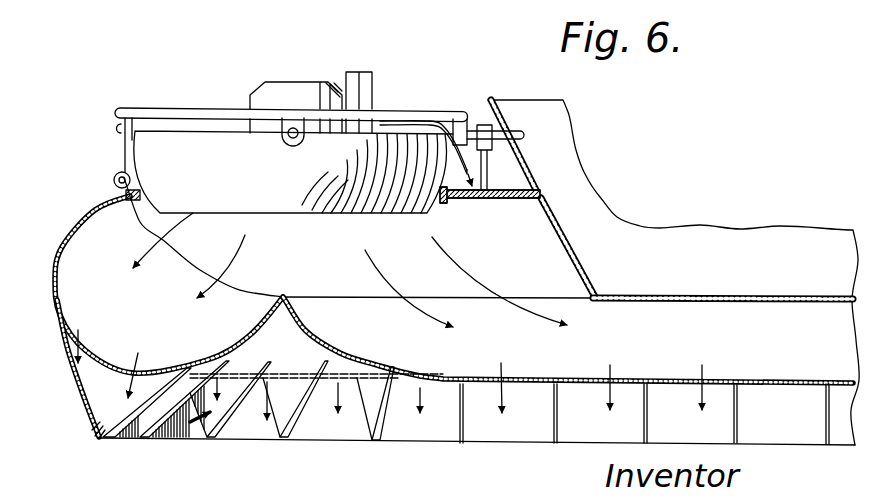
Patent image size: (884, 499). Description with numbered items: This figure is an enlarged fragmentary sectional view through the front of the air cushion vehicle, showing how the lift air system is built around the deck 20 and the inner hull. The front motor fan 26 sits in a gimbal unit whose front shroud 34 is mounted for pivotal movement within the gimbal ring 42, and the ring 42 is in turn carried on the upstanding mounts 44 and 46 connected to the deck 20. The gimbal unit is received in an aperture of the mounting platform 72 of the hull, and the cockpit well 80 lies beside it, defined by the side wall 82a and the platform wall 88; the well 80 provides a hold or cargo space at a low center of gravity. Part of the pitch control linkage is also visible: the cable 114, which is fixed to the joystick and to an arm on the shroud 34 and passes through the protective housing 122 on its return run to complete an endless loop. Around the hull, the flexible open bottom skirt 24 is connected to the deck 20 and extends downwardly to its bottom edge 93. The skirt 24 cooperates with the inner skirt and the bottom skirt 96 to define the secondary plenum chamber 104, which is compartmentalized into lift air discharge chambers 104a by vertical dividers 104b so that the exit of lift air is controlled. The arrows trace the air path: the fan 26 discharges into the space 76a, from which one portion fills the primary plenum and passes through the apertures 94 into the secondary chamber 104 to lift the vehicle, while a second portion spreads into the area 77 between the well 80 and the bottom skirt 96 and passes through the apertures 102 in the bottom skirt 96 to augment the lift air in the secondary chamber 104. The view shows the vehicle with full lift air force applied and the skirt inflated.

The deck 20 is at (510, 190).
The flexible open bottom skirt 24 is at (77, 230).
The front motor fan 26 is at (302, 102).
The front shroud 34 is at (240, 177).
The gimbal ring 42 is at (452, 112).
The upstanding mount 44 is at (124, 152).
The upstanding mount 46 is at (480, 123).
The mounting platform 72 is at (520, 199).
The space 76a is at (328, 259).
The area 77 is at (677, 346).
The well 80 is at (753, 294).
The side wall 82a is at (162, 231).
The platform wall 88 is at (567, 243).
The bottom edge 93 is at (99, 437).
The apertures 94 is at (138, 353).
The bottom skirt 96 is at (360, 348).
The apertures 102 is at (497, 377).
The secondary plenum chamber 104 is at (166, 424).
The lift air discharge chambers 104a is at (243, 427).
The vertical dividers 104b is at (287, 423).
The cable 114 is at (447, 203).
The housing 122 is at (405, 110).